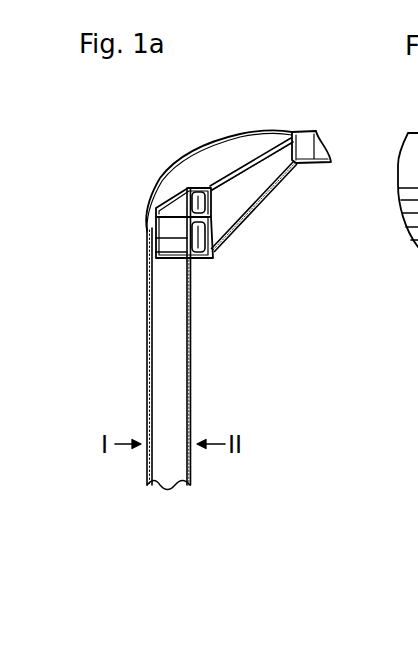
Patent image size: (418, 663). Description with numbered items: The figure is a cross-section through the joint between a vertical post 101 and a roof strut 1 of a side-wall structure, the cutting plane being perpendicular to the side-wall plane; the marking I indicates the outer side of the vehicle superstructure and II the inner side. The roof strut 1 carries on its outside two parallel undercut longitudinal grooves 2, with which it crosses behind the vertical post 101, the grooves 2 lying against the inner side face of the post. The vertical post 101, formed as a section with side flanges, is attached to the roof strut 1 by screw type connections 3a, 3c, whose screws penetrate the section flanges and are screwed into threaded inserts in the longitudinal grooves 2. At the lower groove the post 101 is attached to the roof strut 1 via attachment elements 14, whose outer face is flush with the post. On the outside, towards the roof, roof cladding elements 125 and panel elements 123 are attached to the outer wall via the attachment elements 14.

The roof cladding element 125 is at (310, 118).
The roof strut 1 is at (211, 202).
The screw type connection 3c is at (153, 208).
The screw type connection 3a is at (156, 240).
The undercut longitudinal groove 2 is at (207, 258).
The attachment element 14 is at (150, 270).
The panel element 123 is at (148, 336).
The vertical post 101 is at (170, 383).